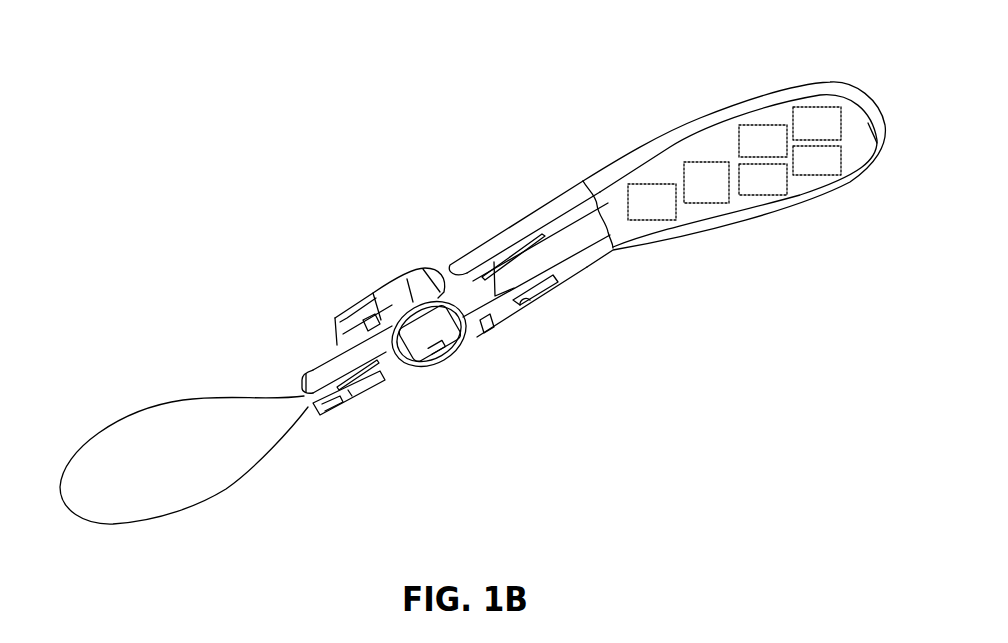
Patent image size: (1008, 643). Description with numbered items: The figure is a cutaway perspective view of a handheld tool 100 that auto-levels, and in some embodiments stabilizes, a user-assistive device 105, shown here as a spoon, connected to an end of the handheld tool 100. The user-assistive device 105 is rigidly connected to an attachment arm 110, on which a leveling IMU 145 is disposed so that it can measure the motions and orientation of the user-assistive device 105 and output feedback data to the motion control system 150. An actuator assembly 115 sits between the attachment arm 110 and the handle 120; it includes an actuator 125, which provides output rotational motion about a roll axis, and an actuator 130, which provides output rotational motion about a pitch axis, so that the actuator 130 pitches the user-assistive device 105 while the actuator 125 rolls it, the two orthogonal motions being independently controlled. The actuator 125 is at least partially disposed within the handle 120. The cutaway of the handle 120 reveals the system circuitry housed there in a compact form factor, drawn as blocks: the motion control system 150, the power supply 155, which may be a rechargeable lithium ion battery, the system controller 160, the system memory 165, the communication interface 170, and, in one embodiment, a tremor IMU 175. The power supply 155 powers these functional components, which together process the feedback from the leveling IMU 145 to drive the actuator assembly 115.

The handheld tool 100 is at (222, 140).
The user-assistive device 105 is at (203, 490).
The attachment arm 110 is at (317, 367).
The actuator assembly 115 is at (563, 162).
The handle 120 is at (815, 82).
The actuator 125 is at (584, 253).
The actuator 130 is at (444, 342).
The leveling IMU 145 is at (345, 407).
The motion control system 150 is at (666, 211).
The power supply 155 is at (720, 191).
The system controller 160 is at (777, 150).
The system memory 165 is at (777, 189).
The communication interface 170 is at (831, 133).
The tremor IMU 175 is at (831, 170).